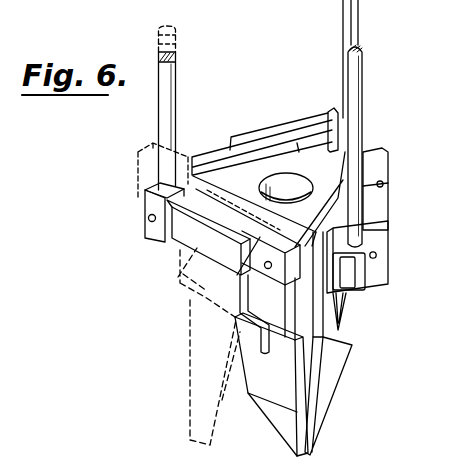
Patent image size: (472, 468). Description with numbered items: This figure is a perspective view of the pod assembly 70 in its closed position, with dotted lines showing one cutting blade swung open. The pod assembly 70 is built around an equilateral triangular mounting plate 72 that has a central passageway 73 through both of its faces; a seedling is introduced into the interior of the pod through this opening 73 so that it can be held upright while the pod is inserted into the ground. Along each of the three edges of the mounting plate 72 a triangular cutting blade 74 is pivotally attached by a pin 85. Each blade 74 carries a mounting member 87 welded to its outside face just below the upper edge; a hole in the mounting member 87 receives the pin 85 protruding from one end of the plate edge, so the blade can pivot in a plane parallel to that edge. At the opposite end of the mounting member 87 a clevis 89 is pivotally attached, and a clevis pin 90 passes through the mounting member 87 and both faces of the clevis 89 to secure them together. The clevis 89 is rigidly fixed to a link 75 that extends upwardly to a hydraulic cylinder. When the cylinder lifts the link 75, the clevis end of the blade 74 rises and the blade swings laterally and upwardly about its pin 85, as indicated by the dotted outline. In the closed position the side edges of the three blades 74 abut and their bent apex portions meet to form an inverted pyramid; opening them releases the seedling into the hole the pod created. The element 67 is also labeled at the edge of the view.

The support arm 67 is at (452, 6).
The pod assembly 70 is at (100, 228).
The triangular mounting plate 72 is at (252, 170).
The central passageway 73 is at (292, 182).
The triangular cutting blade 74 is at (198, 355).
The link 75 is at (162, 115).
The pin 85 is at (272, 260).
The mounting member 87 is at (237, 275).
The clevis 89 is at (143, 201).
The clevis pin 90 is at (148, 223).